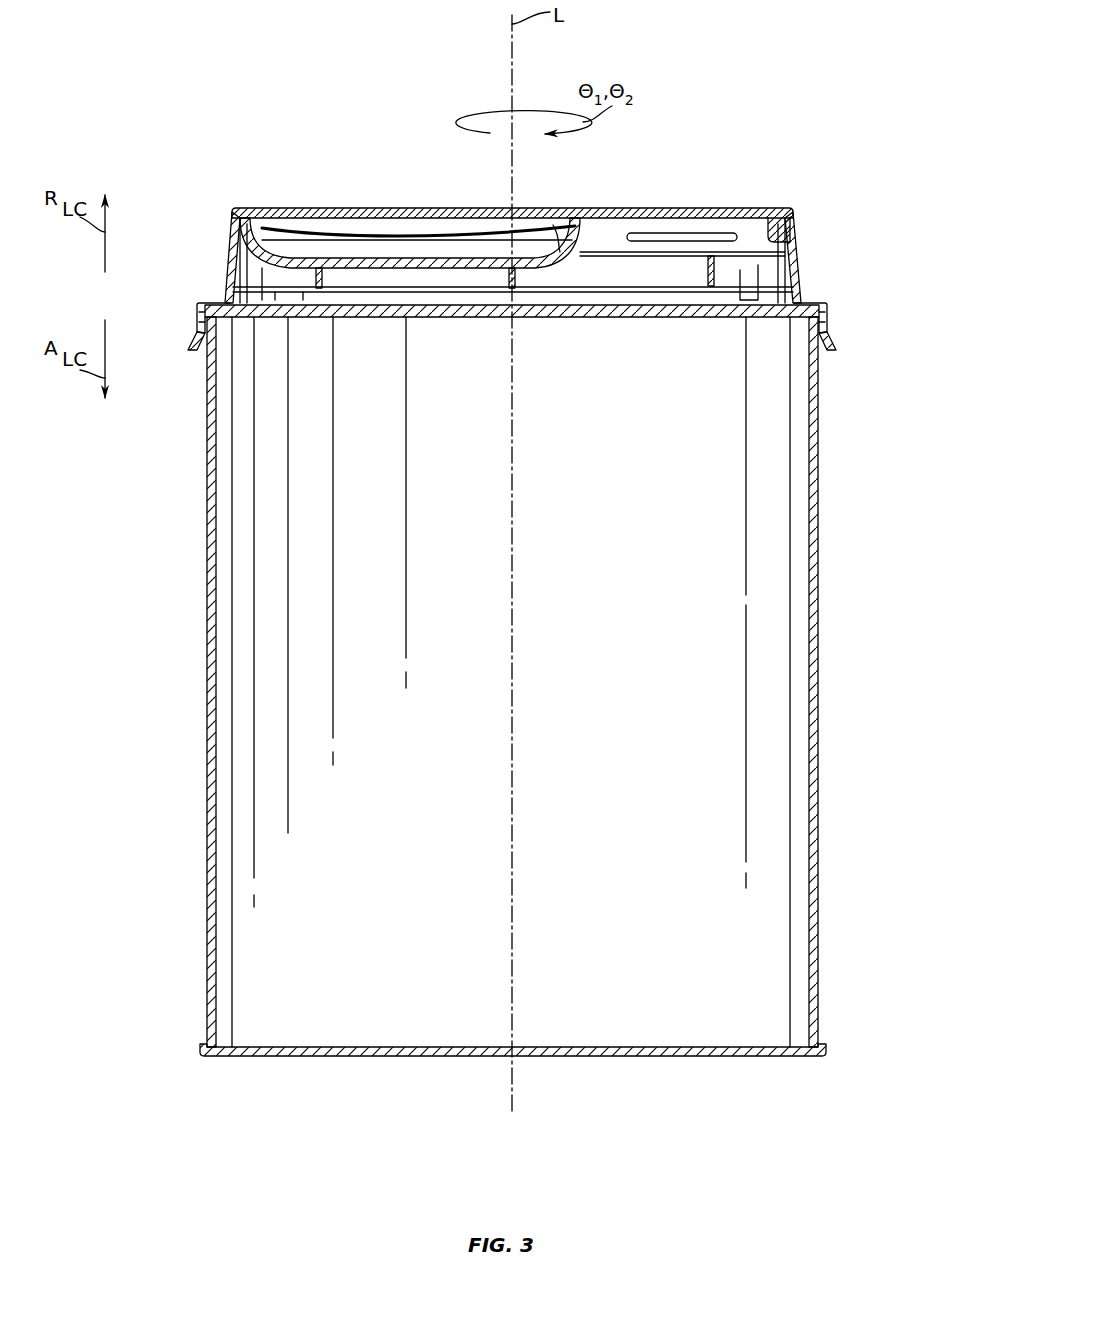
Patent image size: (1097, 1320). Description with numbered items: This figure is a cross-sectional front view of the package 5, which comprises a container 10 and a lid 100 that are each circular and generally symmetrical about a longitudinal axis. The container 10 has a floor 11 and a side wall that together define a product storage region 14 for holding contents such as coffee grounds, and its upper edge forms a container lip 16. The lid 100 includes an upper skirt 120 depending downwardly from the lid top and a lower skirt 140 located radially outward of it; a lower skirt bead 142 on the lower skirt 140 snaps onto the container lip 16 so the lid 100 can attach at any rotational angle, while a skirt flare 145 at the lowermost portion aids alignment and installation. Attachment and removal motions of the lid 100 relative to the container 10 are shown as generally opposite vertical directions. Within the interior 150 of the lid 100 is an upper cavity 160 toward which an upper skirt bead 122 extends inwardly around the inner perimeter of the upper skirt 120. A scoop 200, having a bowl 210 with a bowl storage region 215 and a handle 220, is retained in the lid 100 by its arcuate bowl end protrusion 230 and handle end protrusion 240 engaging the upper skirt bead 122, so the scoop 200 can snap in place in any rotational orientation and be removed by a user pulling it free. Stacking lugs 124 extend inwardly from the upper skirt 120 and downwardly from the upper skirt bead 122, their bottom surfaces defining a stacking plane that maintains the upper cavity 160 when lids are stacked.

The package 5 is at (236, 110).
The container 10 is at (537, 718).
The floor 11 is at (316, 1058).
The product storage region 14 is at (452, 860).
The container lip 16 is at (232, 325).
The lid 100 is at (546, 282).
The upper skirt 120 is at (799, 232).
The upper skirt bead 122 is at (241, 249).
The stacking lugs 124 is at (320, 278).
The lower skirt 140 is at (838, 318).
The lower skirt bead 142 is at (198, 323).
The skirt flare 145 is at (195, 348).
The interior 150 is at (558, 280).
The upper cavity 160 is at (700, 246).
The scoop 200 is at (401, 286).
The bowl 210 is at (405, 270).
The bowl storage region 215 is at (384, 246).
The handle 220 is at (612, 249).
The bowl end protrusion 230 is at (236, 217).
The handle end protrusion 240 is at (776, 233).